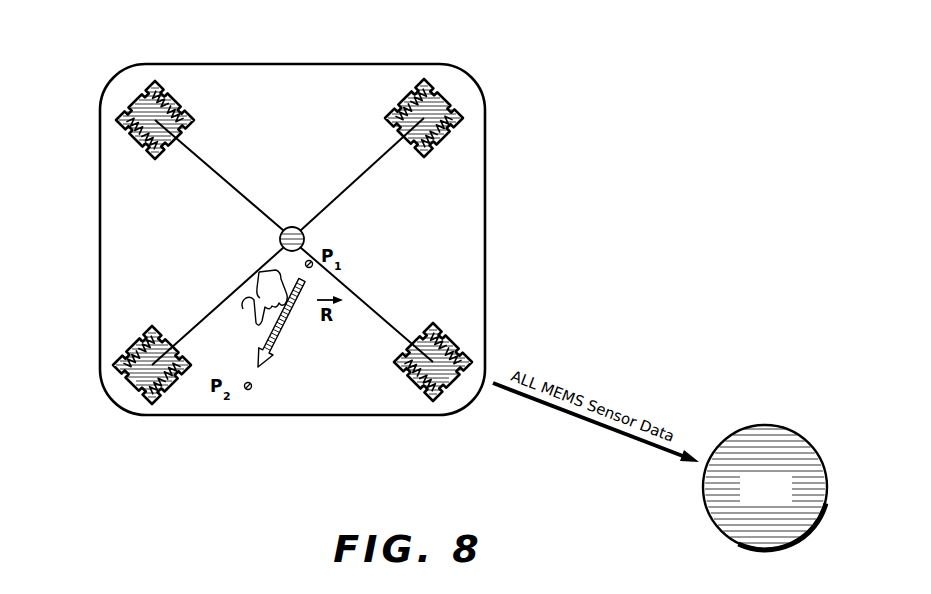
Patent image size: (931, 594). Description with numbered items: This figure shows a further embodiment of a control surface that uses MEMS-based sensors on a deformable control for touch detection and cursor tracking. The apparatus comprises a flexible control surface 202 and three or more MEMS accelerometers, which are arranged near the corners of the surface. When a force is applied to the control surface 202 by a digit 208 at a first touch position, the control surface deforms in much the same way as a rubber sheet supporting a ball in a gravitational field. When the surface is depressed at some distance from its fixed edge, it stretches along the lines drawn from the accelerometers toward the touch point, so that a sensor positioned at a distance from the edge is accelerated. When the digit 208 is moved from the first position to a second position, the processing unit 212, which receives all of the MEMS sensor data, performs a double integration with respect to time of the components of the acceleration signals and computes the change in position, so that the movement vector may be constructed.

The flexible control surface 202 is at (286, 63).
The digit 208 is at (247, 305).
The processing unit 212 is at (763, 425).